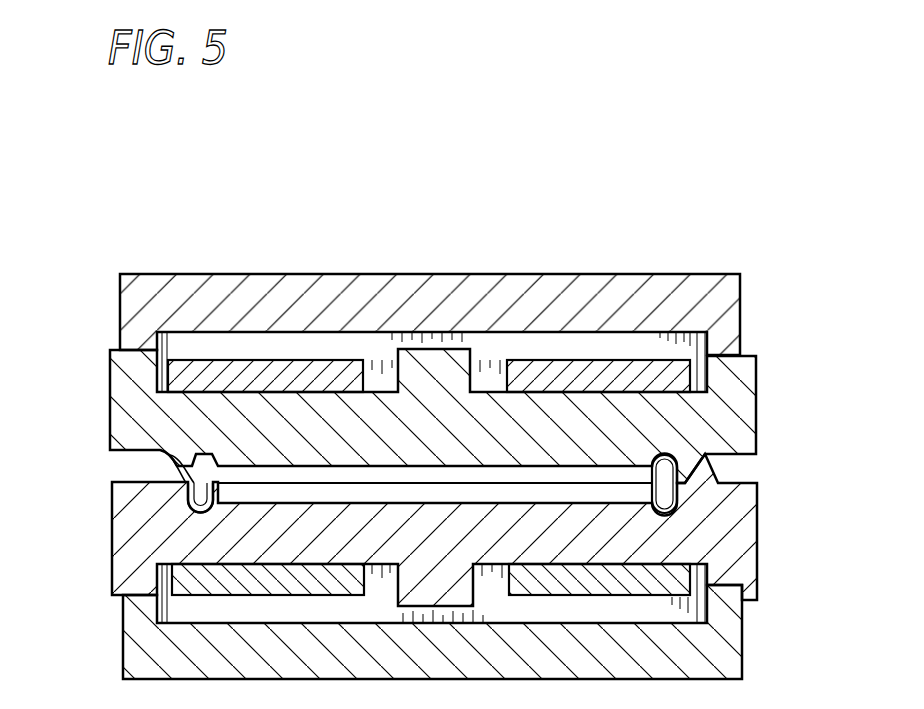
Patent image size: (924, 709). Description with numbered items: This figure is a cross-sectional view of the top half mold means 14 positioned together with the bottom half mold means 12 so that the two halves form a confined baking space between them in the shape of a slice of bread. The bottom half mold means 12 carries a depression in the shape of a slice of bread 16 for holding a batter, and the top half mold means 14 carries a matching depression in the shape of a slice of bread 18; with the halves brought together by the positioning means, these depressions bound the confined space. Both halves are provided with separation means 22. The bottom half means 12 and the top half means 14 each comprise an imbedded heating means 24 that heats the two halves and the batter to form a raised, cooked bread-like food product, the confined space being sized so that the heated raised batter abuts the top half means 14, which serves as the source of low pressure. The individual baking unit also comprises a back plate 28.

The bottom half mold means 12 is at (739, 542).
The top half mold means 14 is at (738, 422).
The depression in the shape of a slice of bread 16 is at (160, 502).
The depression in the shape of a slice of bread 18 is at (157, 467).
The separation means 22 is at (717, 483).
The imbedded heating means 24 is at (683, 376).
The back plate 28 is at (725, 308).